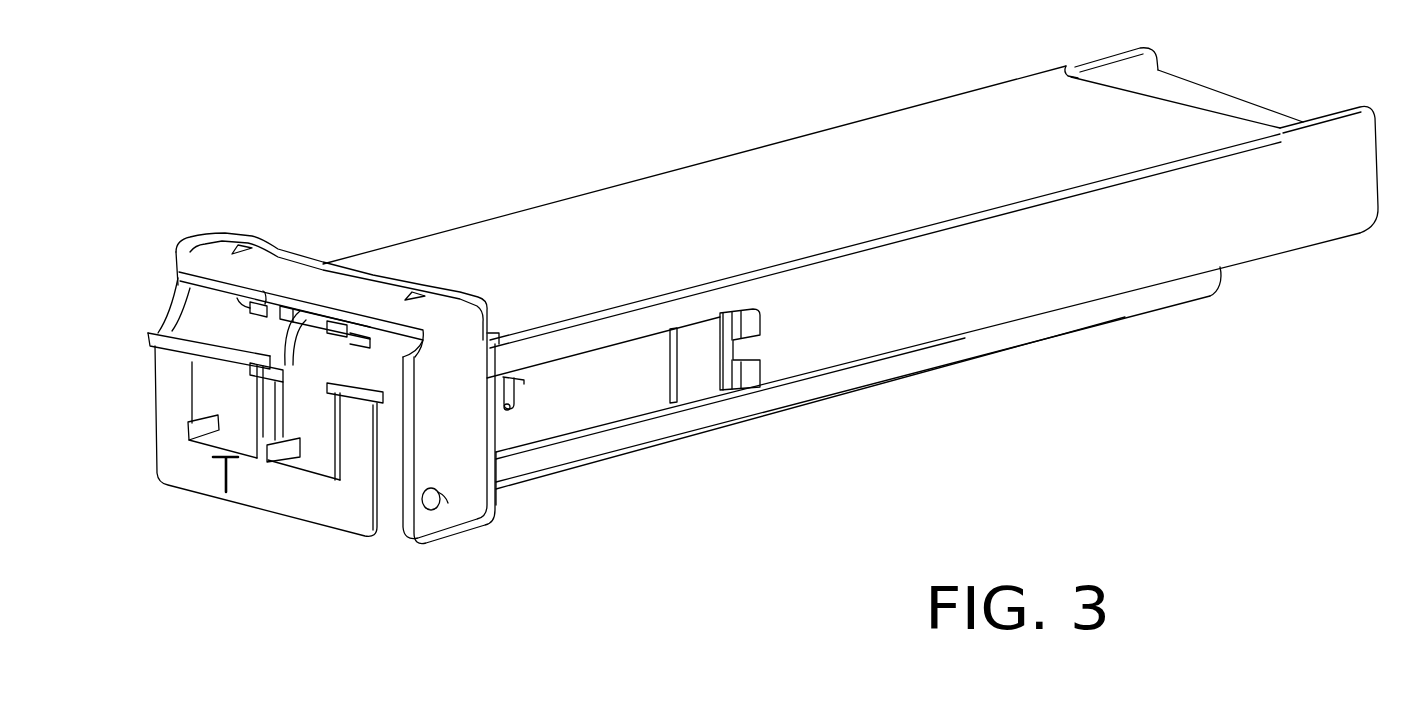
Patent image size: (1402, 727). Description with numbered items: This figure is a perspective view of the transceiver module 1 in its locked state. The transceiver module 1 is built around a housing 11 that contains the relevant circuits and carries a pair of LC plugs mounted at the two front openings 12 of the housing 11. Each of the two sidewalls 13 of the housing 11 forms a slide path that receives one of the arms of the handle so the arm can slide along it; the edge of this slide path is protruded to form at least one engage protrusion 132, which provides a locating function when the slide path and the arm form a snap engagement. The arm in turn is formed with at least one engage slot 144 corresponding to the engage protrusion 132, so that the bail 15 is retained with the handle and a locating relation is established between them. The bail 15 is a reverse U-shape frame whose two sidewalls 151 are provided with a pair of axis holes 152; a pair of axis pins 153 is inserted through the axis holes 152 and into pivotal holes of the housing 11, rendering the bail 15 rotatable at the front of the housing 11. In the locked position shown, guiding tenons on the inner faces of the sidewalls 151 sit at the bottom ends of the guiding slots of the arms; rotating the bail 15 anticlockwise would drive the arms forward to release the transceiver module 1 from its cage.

The transceiver module 1 is at (543, 383).
The housing 11 is at (772, 186).
The front openings 12 is at (212, 385).
The sidewalls 13 is at (1120, 263).
The engage protrusion 132 is at (510, 409).
The engage slot 144 is at (526, 381).
The bail 15 is at (276, 258).
The sidewalls 151 is at (470, 487).
The axis hole 152 is at (438, 497).
The axis pins 153 is at (433, 508).